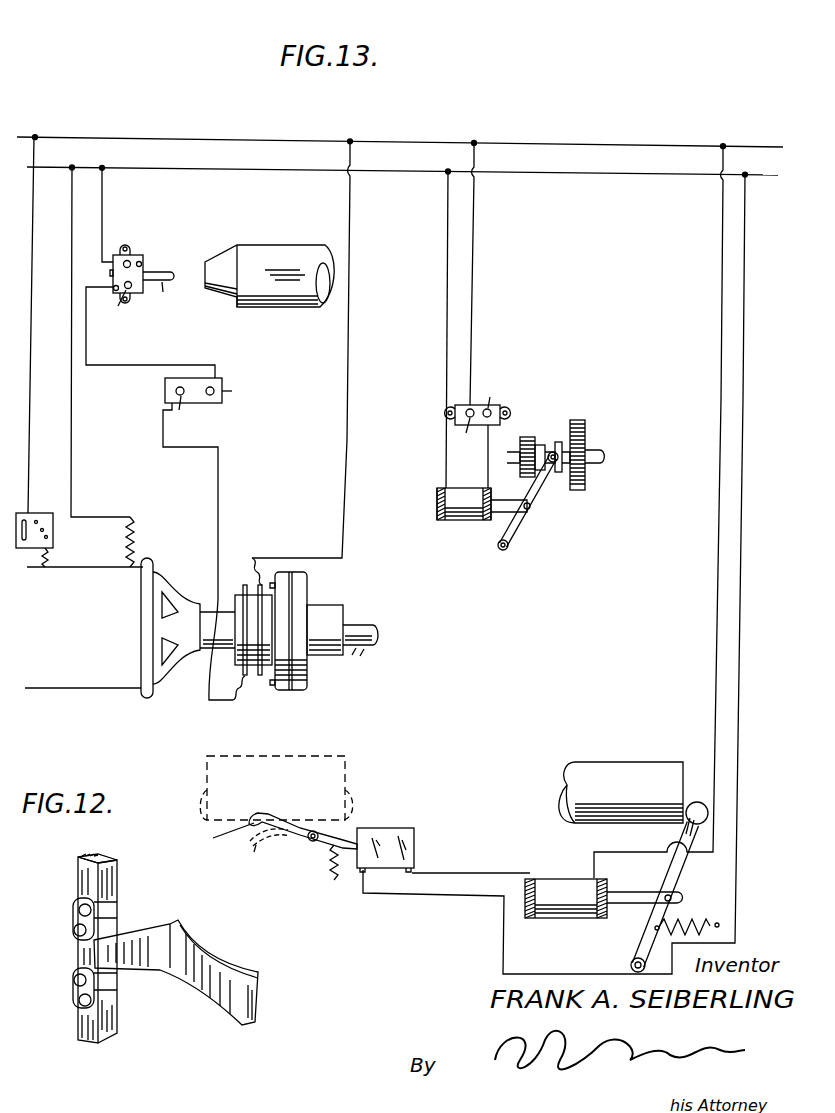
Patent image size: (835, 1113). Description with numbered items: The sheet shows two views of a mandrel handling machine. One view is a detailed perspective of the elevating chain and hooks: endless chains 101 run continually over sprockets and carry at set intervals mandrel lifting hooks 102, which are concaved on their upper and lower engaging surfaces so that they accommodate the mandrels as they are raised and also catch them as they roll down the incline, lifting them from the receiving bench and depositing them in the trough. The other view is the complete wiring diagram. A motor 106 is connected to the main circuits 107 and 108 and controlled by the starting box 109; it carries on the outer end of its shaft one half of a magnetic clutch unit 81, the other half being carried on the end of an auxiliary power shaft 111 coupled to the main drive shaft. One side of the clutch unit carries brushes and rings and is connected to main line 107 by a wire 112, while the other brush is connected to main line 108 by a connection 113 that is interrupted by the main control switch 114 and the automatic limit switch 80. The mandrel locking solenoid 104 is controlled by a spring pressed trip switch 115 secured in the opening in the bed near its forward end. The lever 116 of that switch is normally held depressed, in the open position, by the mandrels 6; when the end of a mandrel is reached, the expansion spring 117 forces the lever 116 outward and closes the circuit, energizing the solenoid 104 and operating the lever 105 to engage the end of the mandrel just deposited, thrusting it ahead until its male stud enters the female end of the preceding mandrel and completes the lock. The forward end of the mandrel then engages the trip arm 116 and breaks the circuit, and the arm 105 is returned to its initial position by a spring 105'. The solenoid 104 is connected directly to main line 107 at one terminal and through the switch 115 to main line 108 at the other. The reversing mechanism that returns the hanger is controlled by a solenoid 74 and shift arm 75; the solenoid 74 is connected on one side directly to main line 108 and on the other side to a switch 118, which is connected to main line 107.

In FIG. 13, the mandrel 6 is at (319, 760).
In FIG. 13, the solenoid 74 is at (462, 520).
In FIG. 13, the shift arm 75 is at (520, 533).
In FIG. 13, the automatic limit switch 80 is at (140, 270).
In FIG. 13, the magnetic clutch unit 81 is at (297, 561).
In FIG. 12, the endless chains 101 is at (115, 907).
In FIG. 12, the mandrel lifting hooks 102 is at (180, 952).
In FIG. 13, the solenoid 104 is at (562, 921).
In FIG. 13, the lever 105 is at (676, 887).
In FIG. 13, the spring 105' is at (721, 910).
In FIG. 13, the motor 106 is at (138, 628).
In FIG. 13, the main circuit 107 is at (316, 141).
In FIG. 13, the main circuit 108 is at (316, 171).
In FIG. 13, the starting box 109 is at (36, 514).
In FIG. 13, the auxiliary power shaft 111 is at (364, 650).
In FIG. 13, the wire 112 is at (347, 441).
In FIG. 13, the connection 113 is at (219, 516).
In FIG. 13, the main control switch 114 is at (205, 386).
In FIG. 13, the trip switch 115 is at (381, 836).
In FIG. 13, the lever 116 is at (276, 815).
In FIG. 13, the expansion spring 117 is at (329, 855).
In FIG. 13, the switch 118 is at (492, 418).